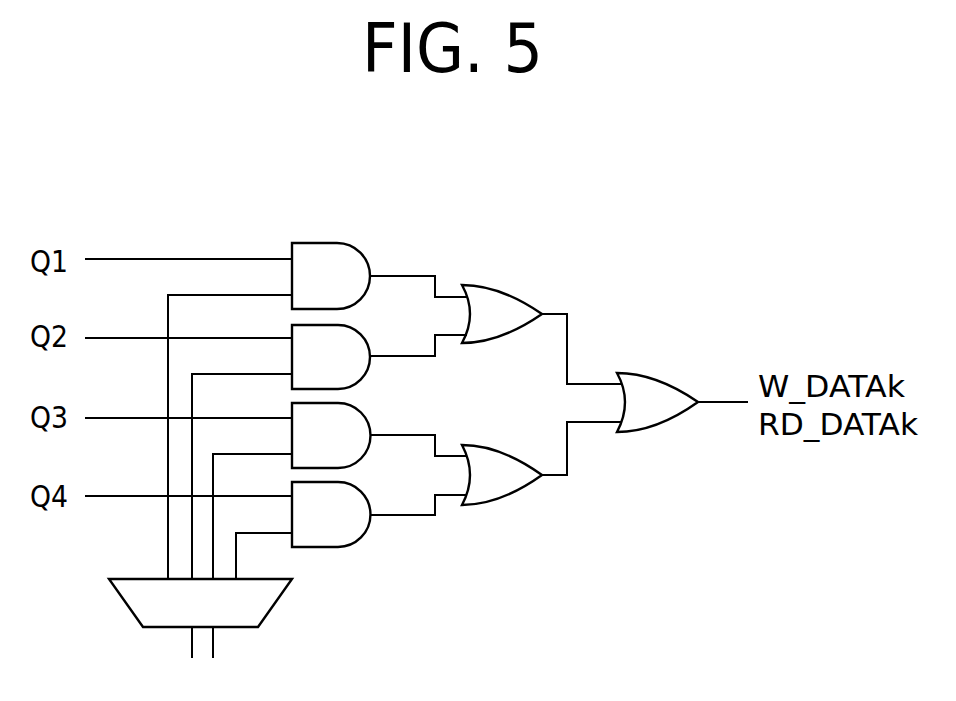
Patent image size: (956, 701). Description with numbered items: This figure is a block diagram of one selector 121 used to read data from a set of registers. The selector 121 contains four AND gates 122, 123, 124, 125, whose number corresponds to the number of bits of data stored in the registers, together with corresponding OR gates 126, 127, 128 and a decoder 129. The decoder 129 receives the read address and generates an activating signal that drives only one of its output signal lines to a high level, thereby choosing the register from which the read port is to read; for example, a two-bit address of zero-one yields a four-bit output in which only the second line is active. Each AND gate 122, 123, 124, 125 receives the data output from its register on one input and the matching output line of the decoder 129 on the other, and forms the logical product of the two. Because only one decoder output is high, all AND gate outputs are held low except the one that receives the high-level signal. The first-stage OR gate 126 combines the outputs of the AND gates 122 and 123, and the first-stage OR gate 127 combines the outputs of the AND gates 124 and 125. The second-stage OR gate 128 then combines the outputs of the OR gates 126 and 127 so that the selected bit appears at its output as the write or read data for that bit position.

The selector 121 is at (636, 202).
The AND gate 122 is at (364, 256).
The AND gate 123 is at (364, 334).
The AND gate 124 is at (364, 413).
The AND gate 125 is at (364, 493).
The first-stage OR gate 126 is at (493, 285).
The first-stage OR gate 127 is at (493, 445).
The second-stage OR gate 128 is at (640, 373).
The decoder 129 is at (275, 604).